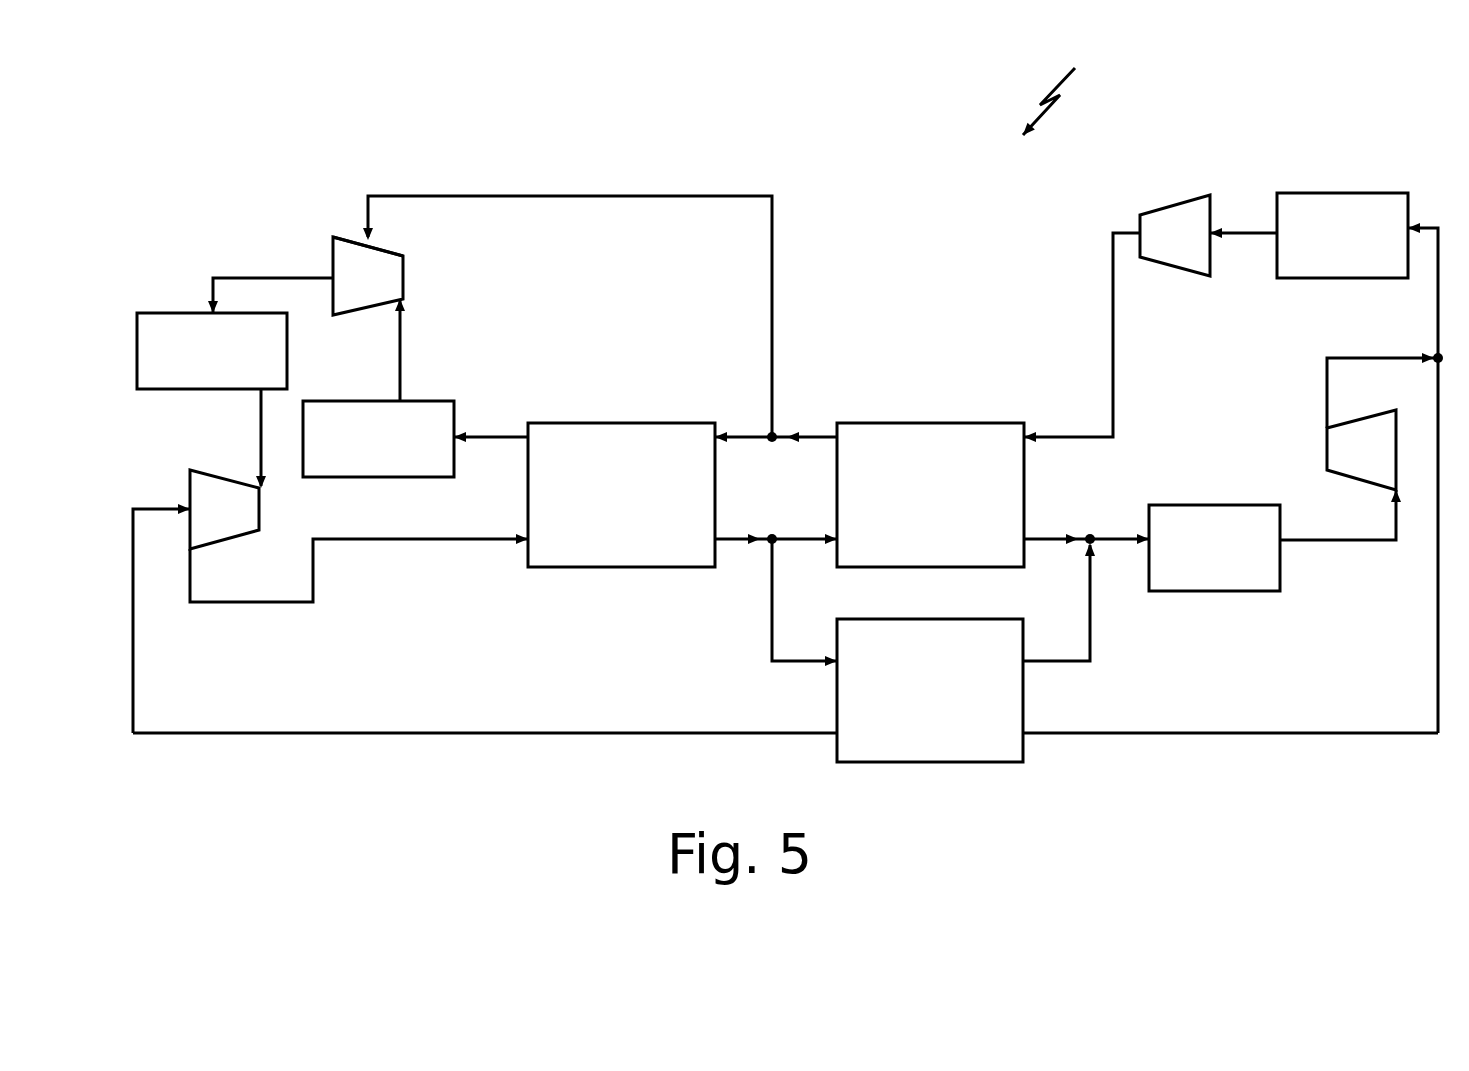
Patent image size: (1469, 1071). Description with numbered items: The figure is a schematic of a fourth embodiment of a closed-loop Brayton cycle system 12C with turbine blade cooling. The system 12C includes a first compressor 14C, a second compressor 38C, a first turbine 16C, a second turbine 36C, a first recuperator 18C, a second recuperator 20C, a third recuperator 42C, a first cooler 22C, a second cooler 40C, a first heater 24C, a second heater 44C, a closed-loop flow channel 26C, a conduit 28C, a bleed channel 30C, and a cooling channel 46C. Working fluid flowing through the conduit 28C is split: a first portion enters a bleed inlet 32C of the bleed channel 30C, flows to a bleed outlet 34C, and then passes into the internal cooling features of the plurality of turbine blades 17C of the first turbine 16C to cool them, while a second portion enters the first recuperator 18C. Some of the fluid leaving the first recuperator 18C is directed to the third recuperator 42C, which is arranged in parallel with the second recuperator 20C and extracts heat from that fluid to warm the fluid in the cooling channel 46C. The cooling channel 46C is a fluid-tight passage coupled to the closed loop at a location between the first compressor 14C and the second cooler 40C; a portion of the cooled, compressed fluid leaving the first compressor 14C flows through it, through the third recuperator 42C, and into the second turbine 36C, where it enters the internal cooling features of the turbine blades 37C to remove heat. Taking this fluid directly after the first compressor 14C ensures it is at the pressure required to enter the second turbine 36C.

The closed-loop Brayton cycle system 12C is at (1071, 85).
The first compressor 14C is at (1336, 447).
The first turbine 16C is at (325, 253).
The turbine blades 17C is at (382, 262).
The first recuperator 18C is at (602, 553).
The second recuperator 20C is at (941, 445).
The first cooler 22C is at (1200, 582).
The first heater 24C is at (430, 412).
The closed-loop flow channel 26C is at (257, 418).
The conduit 28C is at (813, 437).
The bleed channel 30C is at (773, 237).
The bleed inlet 32C is at (768, 430).
The bleed outlet 34C is at (365, 235).
The second turbine 36C is at (180, 492).
The turbine blades 37C is at (197, 485).
The second compressor 38C is at (1168, 217).
The second cooler 40C is at (1347, 200).
The third recuperator 42C is at (950, 750).
The second heater 44C is at (153, 322).
The cooling channel 46C is at (253, 733).